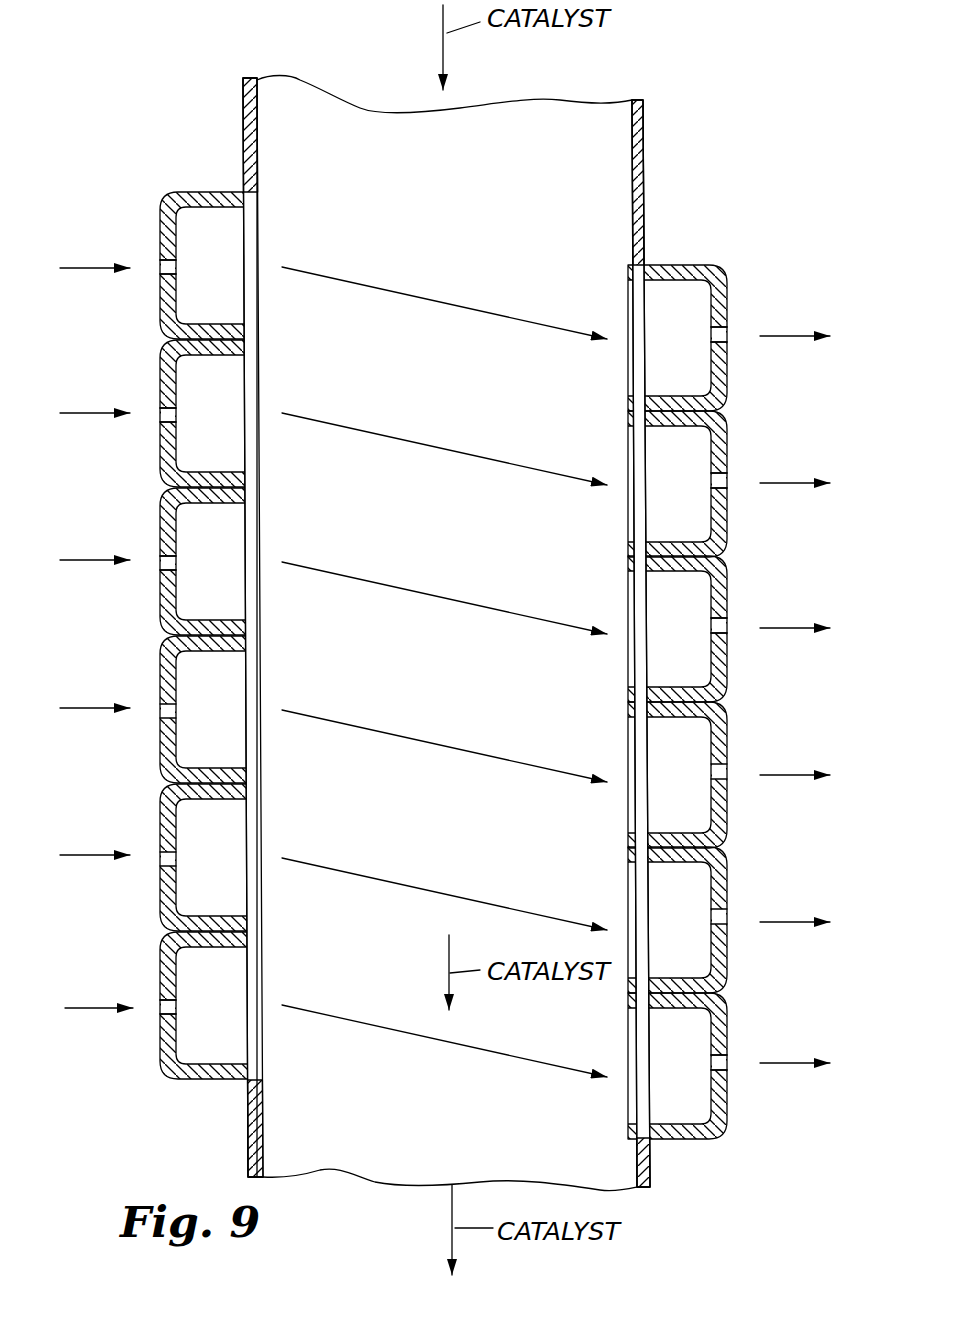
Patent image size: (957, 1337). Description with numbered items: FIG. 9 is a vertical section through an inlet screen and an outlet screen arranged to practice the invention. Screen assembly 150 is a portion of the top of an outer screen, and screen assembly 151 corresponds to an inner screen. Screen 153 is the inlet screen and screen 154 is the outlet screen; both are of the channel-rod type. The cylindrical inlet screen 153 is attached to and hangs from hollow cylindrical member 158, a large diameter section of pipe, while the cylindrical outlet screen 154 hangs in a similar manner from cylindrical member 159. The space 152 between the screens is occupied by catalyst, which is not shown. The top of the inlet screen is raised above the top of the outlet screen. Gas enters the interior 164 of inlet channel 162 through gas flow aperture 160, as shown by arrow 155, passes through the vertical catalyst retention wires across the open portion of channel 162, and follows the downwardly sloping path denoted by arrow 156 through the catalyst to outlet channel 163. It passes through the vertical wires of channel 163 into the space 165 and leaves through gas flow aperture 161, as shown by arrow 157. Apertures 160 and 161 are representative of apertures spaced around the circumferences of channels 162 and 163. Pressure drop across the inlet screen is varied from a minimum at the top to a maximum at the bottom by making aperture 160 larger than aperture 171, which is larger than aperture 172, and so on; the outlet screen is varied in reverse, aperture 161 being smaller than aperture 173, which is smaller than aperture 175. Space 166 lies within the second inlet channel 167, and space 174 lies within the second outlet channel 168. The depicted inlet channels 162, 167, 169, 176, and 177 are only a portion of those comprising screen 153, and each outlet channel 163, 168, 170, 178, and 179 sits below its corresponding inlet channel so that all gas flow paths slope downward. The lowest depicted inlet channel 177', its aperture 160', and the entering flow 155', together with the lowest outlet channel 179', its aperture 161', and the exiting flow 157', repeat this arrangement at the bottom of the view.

The screen assembly 150 is at (483, 633).
The screen assembly 151 is at (632, 442).
The catalyst space 152 is at (454, 357).
The inlet screen 153 is at (263, 532).
The outlet screen 154 is at (640, 575).
The arrow 155 is at (92, 242).
The feed gas inlet flow (lower) 155' is at (90, 982).
The arrow 156 is at (448, 302).
The arrow 157 is at (795, 313).
The effluent outlet flow (lower) 157' is at (796, 1036).
The hollow cylindrical member 158 is at (258, 138).
The cylindrical member 159 is at (643, 190).
The gas flow aperture 160 is at (197, 253).
The inlet port (lower) 160' is at (203, 985).
The gas flow aperture 161 is at (693, 320).
The outlet port (lower) 161' is at (692, 1079).
The inlet channel 162 is at (176, 193).
The outlet channel 163 is at (710, 266).
The interior 164 is at (232, 316).
The space 165 is at (707, 367).
The space 166 is at (232, 457).
The inlet channel 167 is at (165, 360).
The outlet channel 168 is at (725, 417).
The inlet channel 169 is at (165, 508).
The outlet channel 170 is at (726, 570).
The aperture 171 is at (172, 418).
The aperture 172 is at (172, 556).
The aperture 173 is at (716, 480).
The space 174 is at (707, 520).
The aperture 175 is at (716, 623).
The inlet channel 176 is at (168, 657).
The inlet channel 177 is at (171, 848).
The sixth inlet manifold housing 177' is at (176, 1018).
The outlet channel 178 is at (727, 718).
The outlet channel 179 is at (715, 912).
The sixth outlet manifold housing 179' is at (711, 1087).